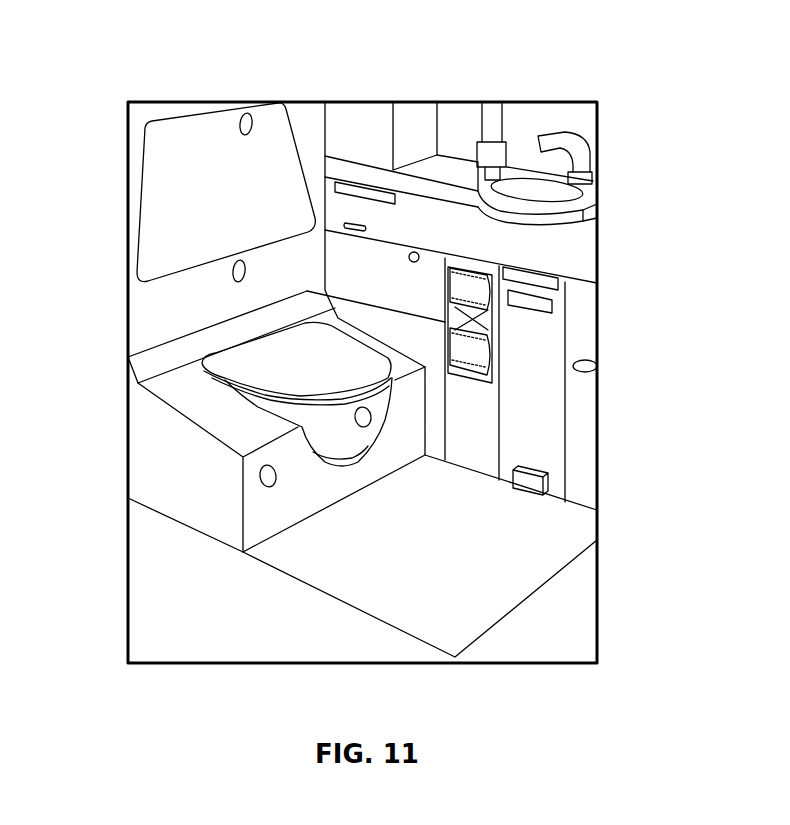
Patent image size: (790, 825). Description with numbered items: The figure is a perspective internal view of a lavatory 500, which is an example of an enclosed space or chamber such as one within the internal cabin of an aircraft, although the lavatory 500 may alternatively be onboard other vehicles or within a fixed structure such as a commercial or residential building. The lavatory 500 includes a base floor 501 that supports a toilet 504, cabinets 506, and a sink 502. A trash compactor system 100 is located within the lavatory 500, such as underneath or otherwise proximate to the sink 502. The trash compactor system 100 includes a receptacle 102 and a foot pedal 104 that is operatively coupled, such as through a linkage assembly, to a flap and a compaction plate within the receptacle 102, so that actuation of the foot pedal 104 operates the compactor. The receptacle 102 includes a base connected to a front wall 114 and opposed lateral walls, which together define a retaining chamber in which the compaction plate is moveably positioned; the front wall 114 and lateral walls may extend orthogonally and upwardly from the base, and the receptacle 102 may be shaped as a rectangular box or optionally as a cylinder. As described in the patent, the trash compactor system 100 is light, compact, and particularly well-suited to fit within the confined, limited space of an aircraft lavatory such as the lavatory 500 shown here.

The lavatory 500 is at (180, 99).
The trash compactor system 100 is at (382, 192).
The sink 502 is at (538, 190).
The toilet 504 is at (268, 360).
The cabinets 506 is at (583, 324).
The receptacle 102 is at (557, 397).
The front wall 114 is at (541, 430).
The foot pedal 104 is at (518, 300).
The base floor 501 is at (530, 568).